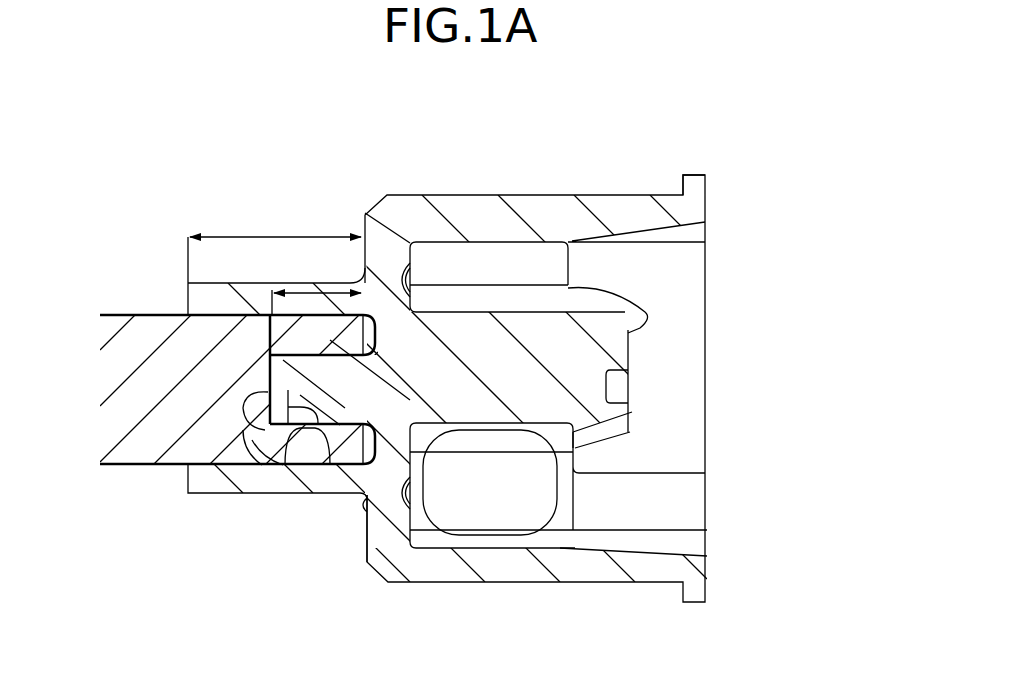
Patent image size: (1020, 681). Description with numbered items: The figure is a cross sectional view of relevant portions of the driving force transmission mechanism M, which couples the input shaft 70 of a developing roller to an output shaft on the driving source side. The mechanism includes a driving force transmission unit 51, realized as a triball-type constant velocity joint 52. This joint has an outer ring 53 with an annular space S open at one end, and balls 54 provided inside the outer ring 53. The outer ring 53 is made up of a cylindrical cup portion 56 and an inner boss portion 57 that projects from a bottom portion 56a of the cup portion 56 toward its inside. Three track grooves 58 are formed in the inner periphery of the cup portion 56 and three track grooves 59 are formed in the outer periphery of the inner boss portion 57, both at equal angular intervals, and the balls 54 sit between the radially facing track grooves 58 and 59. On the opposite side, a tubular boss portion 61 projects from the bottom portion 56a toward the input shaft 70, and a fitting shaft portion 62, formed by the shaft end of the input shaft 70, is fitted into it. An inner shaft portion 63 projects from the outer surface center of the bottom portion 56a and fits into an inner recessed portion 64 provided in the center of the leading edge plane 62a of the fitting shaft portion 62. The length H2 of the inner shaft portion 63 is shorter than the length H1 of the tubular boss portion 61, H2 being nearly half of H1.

The driving force transmission mechanism M is at (435, 172).
The input shaft 70 is at (131, 312).
The tubular boss portion 61 is at (207, 500).
The length of the tubular boss portion H1 is at (275, 225).
The length of the inner shaft portion H2 is at (316, 286).
The fitting shaft portion 62 is at (322, 448).
The leading edge plane 62a is at (373, 438).
The inner shaft portion 63 is at (240, 440).
The inner recessed portion 64 is at (280, 447).
The driving force transmission unit 51 is at (494, 163).
The annular space S is at (515, 253).
The triball-type constant velocity joint 52 is at (592, 193).
The outer ring 53 is at (655, 195).
The inner boss portion 57 is at (613, 350).
The track grooves 59 is at (613, 293).
The balls 54 is at (550, 503).
The cylindrical cup portion 56 is at (470, 584).
The bottom portion 56a is at (373, 497).
The track grooves 58 is at (585, 553).